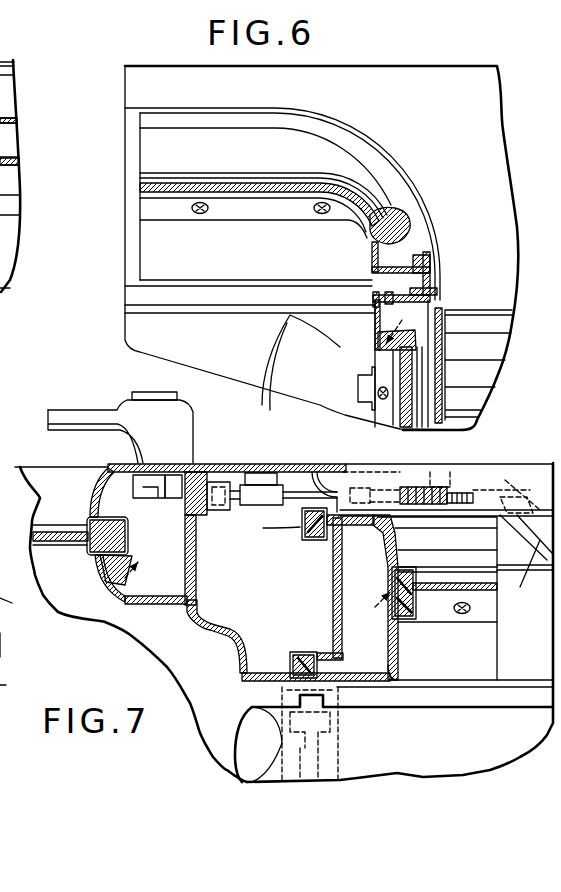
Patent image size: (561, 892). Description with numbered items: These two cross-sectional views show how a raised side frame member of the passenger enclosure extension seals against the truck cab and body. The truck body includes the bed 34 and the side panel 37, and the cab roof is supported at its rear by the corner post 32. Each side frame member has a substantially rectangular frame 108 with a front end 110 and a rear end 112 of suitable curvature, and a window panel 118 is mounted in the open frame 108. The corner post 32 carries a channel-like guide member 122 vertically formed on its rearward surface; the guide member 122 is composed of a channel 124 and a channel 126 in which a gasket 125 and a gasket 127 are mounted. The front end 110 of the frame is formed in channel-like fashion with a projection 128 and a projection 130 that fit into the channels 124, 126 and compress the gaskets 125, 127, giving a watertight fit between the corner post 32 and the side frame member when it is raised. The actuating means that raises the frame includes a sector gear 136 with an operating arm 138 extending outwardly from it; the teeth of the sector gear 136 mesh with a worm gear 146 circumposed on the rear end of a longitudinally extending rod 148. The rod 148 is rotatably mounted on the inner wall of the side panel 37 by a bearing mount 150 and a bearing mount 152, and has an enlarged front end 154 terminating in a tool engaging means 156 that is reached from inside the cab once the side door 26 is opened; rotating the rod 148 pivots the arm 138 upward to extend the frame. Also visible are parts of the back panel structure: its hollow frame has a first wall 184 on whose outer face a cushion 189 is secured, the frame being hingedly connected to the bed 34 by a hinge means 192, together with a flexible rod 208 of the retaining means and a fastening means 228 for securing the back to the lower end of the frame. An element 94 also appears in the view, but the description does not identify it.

In FIG. 7, the side door 26 is at (48, 497).
In FIG. 7, the corner post 32 is at (340, 610).
In FIG. 6, the bed 34 is at (463, 378).
In FIG. 6, the side panel 37 is at (493, 174).
In FIG. 6, the bracket 94 is at (393, 358).
In FIG. 7, the rectangular frame 108 is at (473, 520).
In FIG. 7, the front end 110 is at (457, 547).
In FIG. 6, the rear end 112 is at (437, 238).
In FIG. 6, the window panel 118 is at (257, 188).
In FIG. 7, the window panel 118 is at (448, 597).
In FIG. 7, the guide member 122 is at (315, 542).
In FIG. 7, the channel 124 is at (302, 537).
In FIG. 7, the gasket 125 is at (357, 547).
In FIG. 7, the channel 126 is at (290, 653).
In FIG. 7, the gasket 127 is at (318, 637).
In FIG. 7, the projection 128 is at (390, 455).
In FIG. 7, the projection 130 is at (340, 669).
In FIG. 7, the sector gear 136 is at (473, 493).
In FIG. 7, the operating arm 138 is at (537, 543).
In FIG. 7, the worm gear 146 is at (497, 460).
In FIG. 7, the rod 148 is at (315, 508).
In FIG. 7, the bearing mount 150 is at (432, 487).
In FIG. 7, the bearing mount 152 is at (260, 473).
In FIG. 7, the enlarged front end 154 is at (222, 512).
In FIG. 7, the tool engaging means 156 is at (182, 537).
In FIG. 7, the first wall 184 is at (0, 640).
In FIG. 6, the cushion 189 is at (292, 363).
In FIG. 7, the cushion 189 is at (0, 690).
In FIG. 6, the hinge means 192 is at (446, 312).
In FIG. 7, the flexible rod 208 is at (14, 606).
In FIG. 6, the fastening means 228 is at (356, 392).